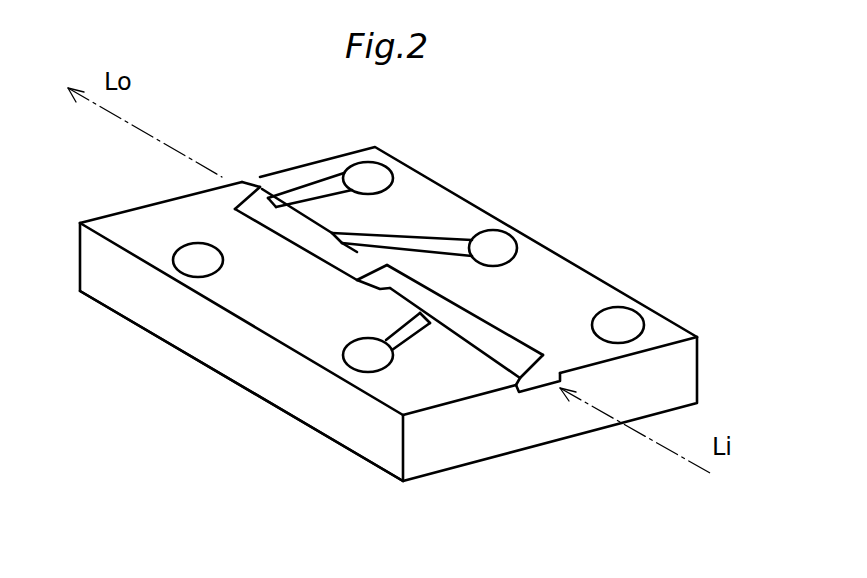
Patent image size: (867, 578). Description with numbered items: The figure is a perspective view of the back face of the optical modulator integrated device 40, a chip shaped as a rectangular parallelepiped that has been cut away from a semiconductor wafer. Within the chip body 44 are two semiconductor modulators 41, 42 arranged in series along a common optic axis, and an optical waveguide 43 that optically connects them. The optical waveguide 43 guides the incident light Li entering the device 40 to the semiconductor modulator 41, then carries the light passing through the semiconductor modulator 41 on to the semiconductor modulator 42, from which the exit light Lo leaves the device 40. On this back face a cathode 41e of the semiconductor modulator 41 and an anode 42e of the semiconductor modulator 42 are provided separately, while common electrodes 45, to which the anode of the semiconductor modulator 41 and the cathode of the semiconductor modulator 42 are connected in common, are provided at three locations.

The optical modulator integrated device 40 is at (622, 163).
The semiconductor modulator 41 is at (492, 330).
The semiconductor modulator 42 is at (315, 232).
The optical waveguide 43 is at (238, 192).
The block body 44 is at (240, 365).
The common electrodes 45 is at (380, 178).
The cathode 41e is at (372, 352).
The anode 42e is at (190, 266).